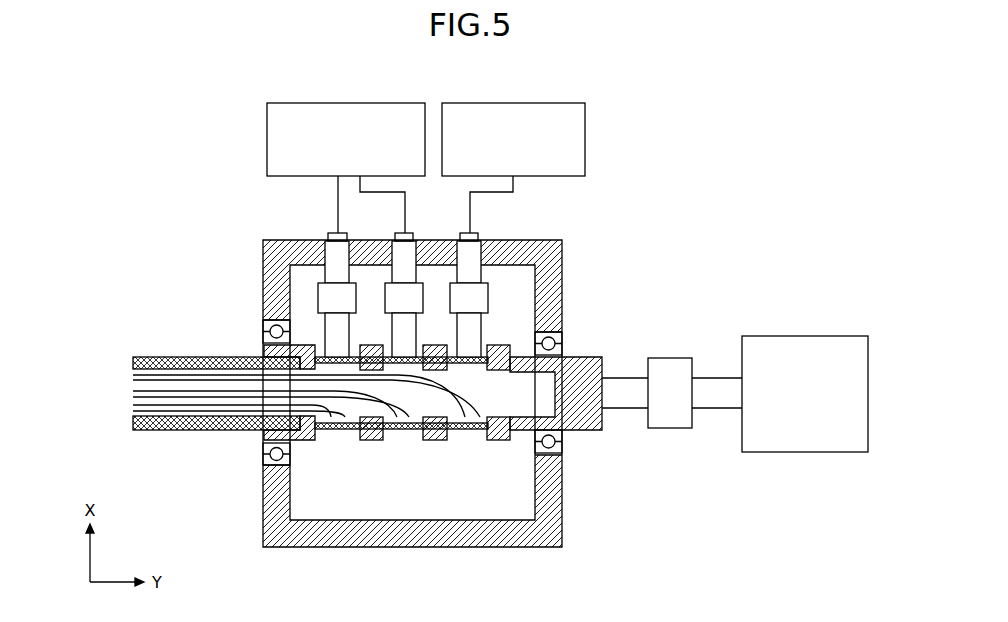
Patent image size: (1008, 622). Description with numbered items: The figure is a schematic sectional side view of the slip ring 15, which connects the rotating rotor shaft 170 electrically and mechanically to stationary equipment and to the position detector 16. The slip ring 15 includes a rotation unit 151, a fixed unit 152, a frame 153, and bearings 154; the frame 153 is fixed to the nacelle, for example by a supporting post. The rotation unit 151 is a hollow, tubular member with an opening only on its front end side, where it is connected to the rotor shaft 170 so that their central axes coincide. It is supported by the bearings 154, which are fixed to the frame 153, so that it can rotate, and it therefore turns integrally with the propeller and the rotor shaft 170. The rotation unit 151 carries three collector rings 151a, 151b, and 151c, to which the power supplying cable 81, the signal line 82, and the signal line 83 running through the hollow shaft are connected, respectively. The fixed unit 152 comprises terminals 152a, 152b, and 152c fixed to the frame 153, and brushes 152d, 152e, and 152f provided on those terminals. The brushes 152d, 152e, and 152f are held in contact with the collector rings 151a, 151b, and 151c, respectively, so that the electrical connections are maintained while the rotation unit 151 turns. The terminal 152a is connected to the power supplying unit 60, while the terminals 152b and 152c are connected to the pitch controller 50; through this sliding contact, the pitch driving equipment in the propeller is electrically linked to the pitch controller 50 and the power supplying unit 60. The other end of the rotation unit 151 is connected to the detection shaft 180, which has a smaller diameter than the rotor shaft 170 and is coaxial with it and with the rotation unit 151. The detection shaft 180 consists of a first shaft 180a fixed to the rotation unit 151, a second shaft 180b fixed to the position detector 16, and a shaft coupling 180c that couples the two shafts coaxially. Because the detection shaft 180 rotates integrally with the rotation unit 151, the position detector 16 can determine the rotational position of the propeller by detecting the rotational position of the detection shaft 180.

The slip ring 15 is at (575, 214).
The position detector 16 is at (808, 336).
The pitch controller 50 is at (347, 102).
The power supplying unit 60 is at (513, 102).
The power supplying cable 81 is at (237, 385).
The signal line 82 is at (200, 398).
The signal line 83 is at (155, 413).
The rotation unit 151 is at (587, 442).
The collector ring 151a is at (467, 430).
The collector ring 151b is at (402, 430).
The collector ring 151c is at (337, 430).
The fixed unit 152 is at (313, 273).
The terminal 152a is at (478, 233).
The terminal 152b is at (413, 233).
The terminal 152c is at (330, 233).
The brush 152d is at (483, 328).
The brush 152e is at (388, 326).
The brush 152f is at (323, 328).
The frame 153 is at (263, 256).
The bearings 154 is at (263, 325).
The rotor shaft 170 is at (157, 356).
The detection shaft 180 is at (750, 286).
The first shaft 180a is at (622, 378).
The second shaft 180b is at (718, 378).
The shaft coupling 180c is at (672, 358).